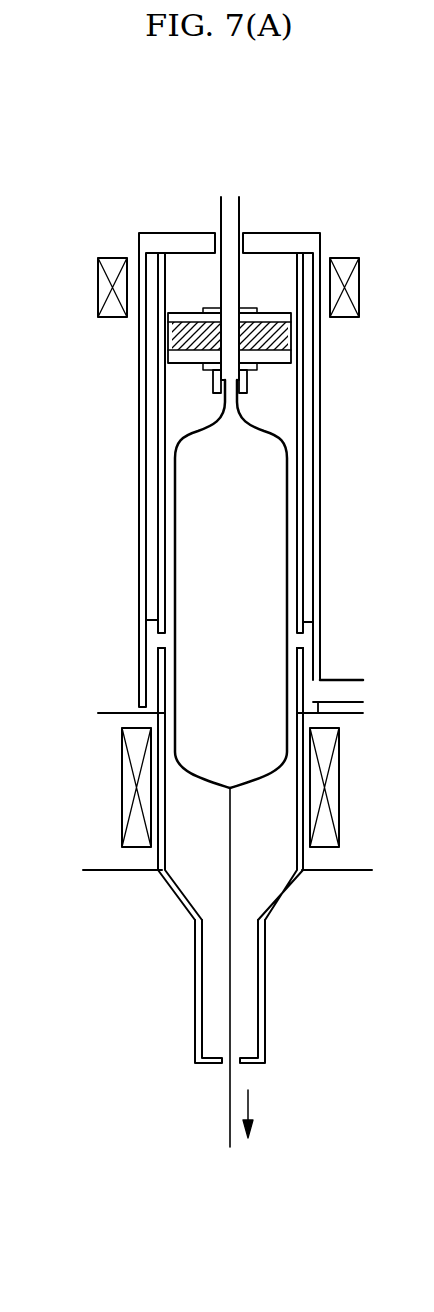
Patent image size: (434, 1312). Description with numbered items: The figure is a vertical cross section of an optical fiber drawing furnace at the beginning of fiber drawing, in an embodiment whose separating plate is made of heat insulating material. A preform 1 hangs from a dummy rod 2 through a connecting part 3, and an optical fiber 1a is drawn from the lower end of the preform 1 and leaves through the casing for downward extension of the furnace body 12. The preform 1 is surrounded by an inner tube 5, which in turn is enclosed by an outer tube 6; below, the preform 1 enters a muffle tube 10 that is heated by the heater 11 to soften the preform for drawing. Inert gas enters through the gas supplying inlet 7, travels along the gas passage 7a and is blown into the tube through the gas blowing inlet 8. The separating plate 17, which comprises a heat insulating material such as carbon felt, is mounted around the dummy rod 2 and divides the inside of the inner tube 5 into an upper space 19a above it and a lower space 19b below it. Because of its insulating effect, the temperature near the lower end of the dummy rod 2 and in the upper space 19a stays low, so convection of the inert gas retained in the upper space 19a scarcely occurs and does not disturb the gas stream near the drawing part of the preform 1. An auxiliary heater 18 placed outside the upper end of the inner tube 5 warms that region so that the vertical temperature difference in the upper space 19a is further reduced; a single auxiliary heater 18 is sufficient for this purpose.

The preform 1 is at (250, 507).
The optical fiber 1a is at (232, 1040).
The dummy rod 2 is at (230, 225).
The connecting part 3 is at (252, 386).
The inner tube 5 is at (305, 546).
The outer tube 6 is at (320, 430).
The gas supplying inlet 7 is at (318, 694).
The gas passage 7a is at (308, 663).
The gas blowing inlet 8 is at (162, 642).
The muffle tube 10 is at (283, 820).
The heater 11 is at (127, 787).
The casing for downward extension of a furnace body 12 is at (267, 993).
The separating plate 17 is at (168, 350).
The auxiliary heater 18 is at (100, 290).
The upper space 19a is at (195, 273).
The lower space 19b is at (183, 410).